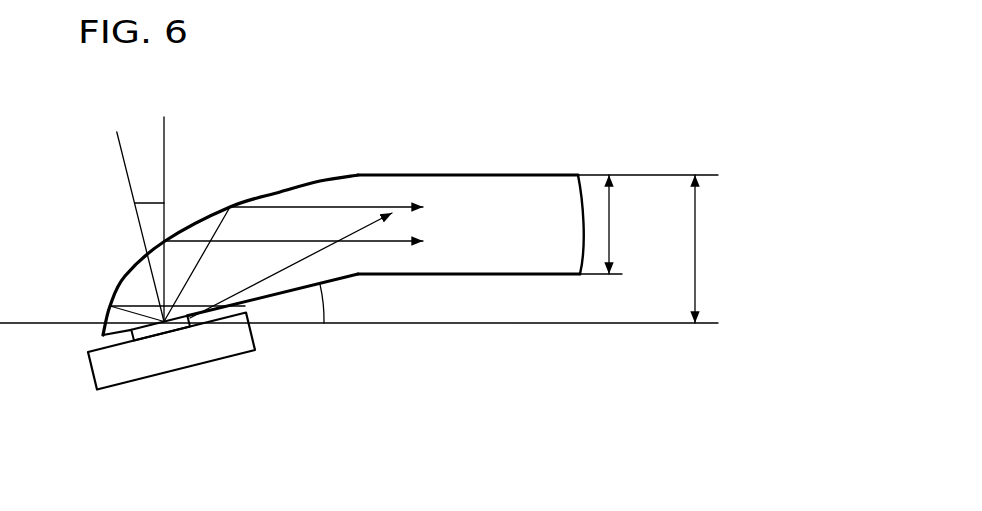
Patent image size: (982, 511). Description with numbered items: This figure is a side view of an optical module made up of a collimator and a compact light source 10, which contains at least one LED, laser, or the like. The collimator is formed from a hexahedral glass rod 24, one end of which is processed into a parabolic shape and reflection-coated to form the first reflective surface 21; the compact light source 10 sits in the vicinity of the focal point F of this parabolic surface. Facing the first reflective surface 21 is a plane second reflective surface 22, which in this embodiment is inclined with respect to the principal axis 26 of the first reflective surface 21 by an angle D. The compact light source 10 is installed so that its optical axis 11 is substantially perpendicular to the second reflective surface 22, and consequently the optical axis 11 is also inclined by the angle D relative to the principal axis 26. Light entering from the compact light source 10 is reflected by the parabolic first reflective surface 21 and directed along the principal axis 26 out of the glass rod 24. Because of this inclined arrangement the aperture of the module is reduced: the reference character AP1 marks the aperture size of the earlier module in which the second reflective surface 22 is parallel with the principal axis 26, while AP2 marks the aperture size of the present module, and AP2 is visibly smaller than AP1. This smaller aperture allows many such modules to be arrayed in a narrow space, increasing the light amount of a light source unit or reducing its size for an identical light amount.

The compact light source 10 is at (218, 360).
The optical axis 11 is at (125, 166).
The first reflective surface 21 is at (280, 192).
The second reflective surface 22 is at (285, 293).
The glass rod 24 is at (480, 175).
The principal axis 26 is at (427, 323).
The focal point F is at (164, 322).
The angle D is at (240, 249).
The aperture size of optical module 101 AP1 is at (720, 249).
The aperture size of optical module 102 AP2 is at (648, 224).